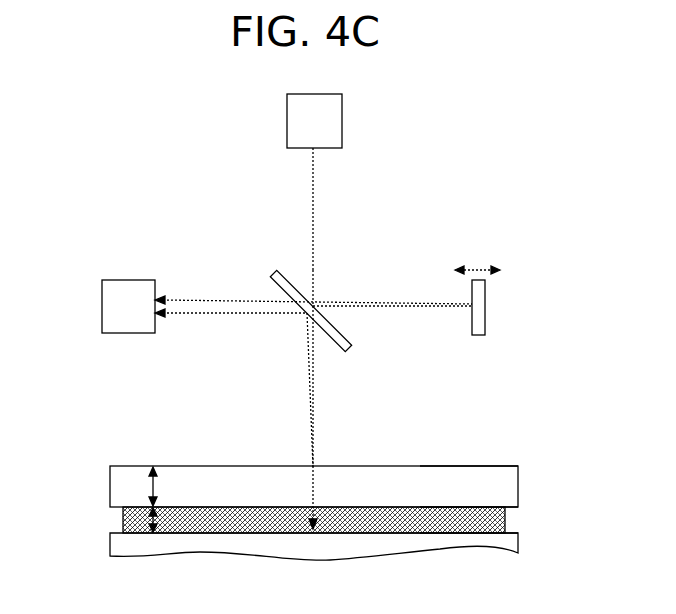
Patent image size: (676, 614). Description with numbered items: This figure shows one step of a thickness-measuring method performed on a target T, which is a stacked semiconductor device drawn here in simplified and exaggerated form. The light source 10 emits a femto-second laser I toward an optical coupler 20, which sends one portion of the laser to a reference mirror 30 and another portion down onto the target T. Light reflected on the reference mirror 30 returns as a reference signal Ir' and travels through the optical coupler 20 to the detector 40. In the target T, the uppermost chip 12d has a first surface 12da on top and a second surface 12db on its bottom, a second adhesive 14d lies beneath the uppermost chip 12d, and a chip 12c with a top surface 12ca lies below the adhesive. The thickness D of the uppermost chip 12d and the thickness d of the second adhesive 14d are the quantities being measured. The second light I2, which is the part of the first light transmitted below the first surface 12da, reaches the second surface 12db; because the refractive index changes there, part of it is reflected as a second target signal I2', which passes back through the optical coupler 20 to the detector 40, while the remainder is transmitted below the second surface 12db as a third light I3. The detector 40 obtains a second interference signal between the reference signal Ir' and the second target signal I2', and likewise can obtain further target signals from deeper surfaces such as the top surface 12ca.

The light source 10 is at (342, 119).
The optical coupler 20 is at (272, 272).
The reference mirror 30 is at (485, 305).
The detector 40 is at (102, 307).
The uppermost chip 12d is at (110, 487).
The second adhesive 14d is at (123, 518).
The chip 12c is at (110, 545).
The first surface 12da is at (485, 467).
The second surface 12db is at (485, 506).
The top surface 12ca is at (485, 533).
The femto-second laser I is at (313, 200).
The reference signal Ir' is at (313, 274).
The second target signal I2' is at (231, 349).
The second light I2 is at (345, 392).
The third light I3 is at (318, 512).
The thickness of chip D is at (155, 487).
The thickness of second adhesive d is at (158, 524).
The target T is at (114, 445).